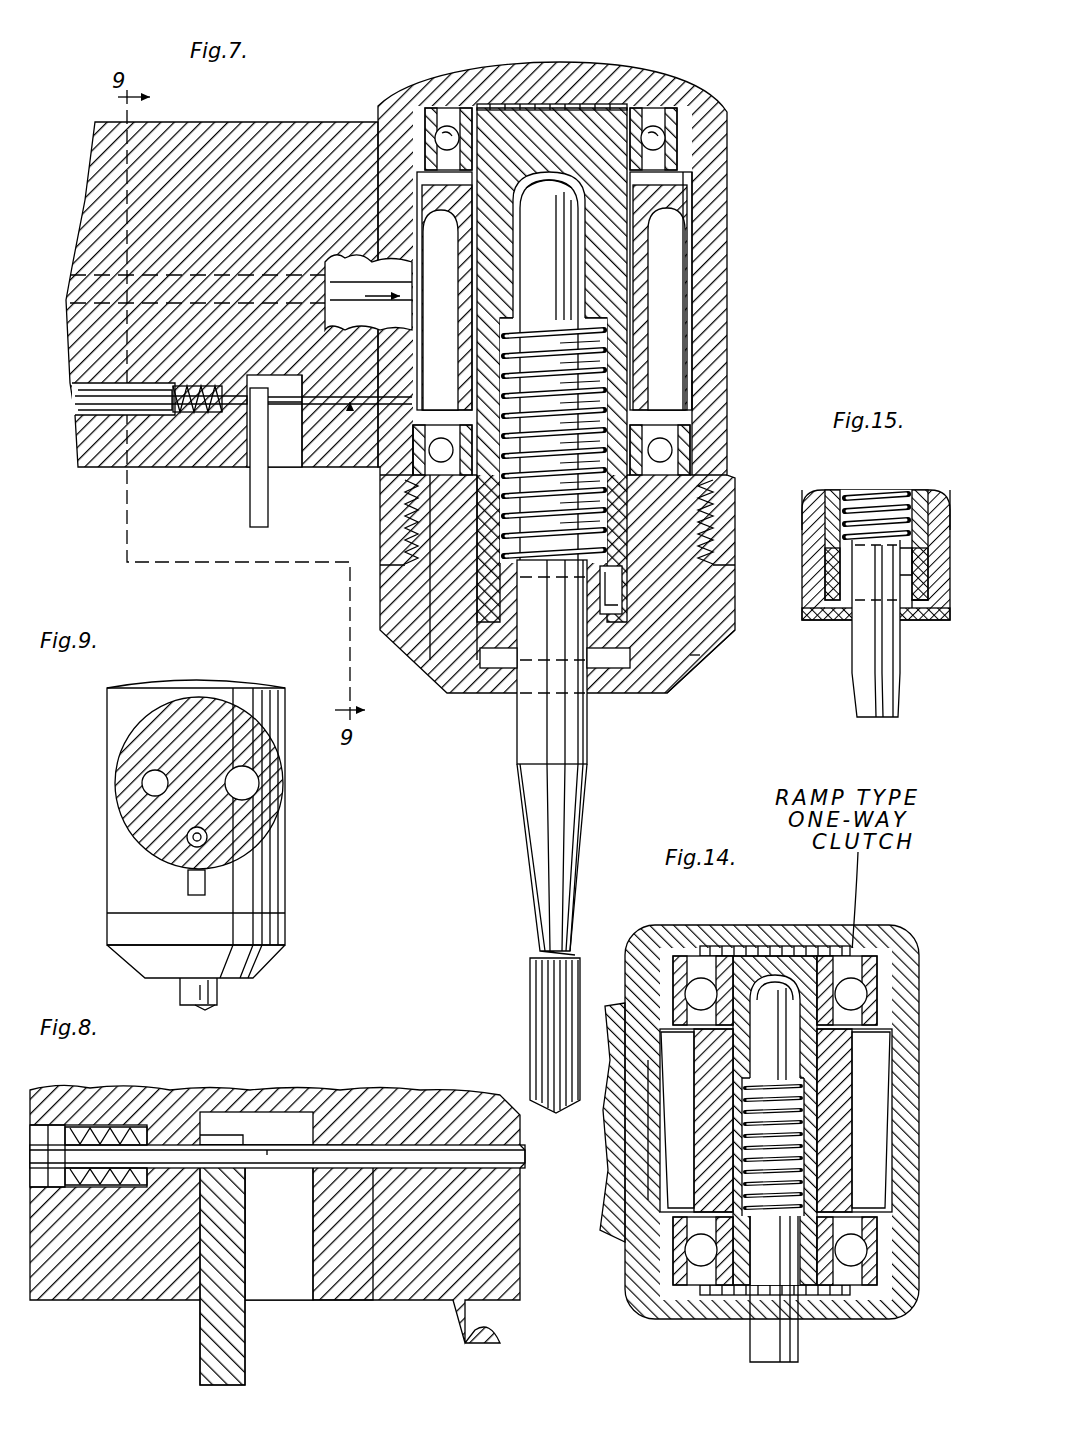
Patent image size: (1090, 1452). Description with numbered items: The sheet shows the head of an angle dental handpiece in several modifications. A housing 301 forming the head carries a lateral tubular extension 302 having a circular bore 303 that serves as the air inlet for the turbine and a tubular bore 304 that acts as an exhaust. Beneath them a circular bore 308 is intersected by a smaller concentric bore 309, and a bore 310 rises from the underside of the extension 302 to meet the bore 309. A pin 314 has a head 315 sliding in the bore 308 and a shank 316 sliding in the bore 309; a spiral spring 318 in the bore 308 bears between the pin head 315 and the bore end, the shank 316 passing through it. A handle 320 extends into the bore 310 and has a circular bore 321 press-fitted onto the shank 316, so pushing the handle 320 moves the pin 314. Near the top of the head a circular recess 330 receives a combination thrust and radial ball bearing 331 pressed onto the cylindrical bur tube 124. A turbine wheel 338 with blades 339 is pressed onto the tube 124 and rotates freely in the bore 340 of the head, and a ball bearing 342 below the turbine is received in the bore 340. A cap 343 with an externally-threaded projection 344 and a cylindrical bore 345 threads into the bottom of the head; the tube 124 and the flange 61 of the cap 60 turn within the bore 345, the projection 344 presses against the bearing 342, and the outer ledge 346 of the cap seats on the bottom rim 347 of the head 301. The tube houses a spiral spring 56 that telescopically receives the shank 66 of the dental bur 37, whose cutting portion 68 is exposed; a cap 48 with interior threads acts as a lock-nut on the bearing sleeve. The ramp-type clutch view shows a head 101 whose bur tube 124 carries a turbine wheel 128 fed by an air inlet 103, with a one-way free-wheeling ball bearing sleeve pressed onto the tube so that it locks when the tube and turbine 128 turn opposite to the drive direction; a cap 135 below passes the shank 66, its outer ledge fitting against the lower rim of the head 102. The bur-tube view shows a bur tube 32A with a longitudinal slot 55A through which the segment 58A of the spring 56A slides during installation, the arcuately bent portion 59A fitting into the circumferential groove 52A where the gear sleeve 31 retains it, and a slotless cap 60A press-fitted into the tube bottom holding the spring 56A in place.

In FIG. 7, the housing 301 is at (508, 72).
In FIG. 9, the housing 301 is at (205, 680).
In FIG. 7, the lateral tubular extension 302 is at (244, 130).
In FIG. 9, the lateral tubular extension 302 is at (250, 823).
In FIG. 8, the lateral tubular extension 302 is at (388, 1282).
In FIG. 7, the circular bore 303 is at (343, 262).
In FIG. 9, the circular bore 303 is at (145, 785).
In FIG. 9, the tubular bore 304 is at (245, 782).
In FIG. 7, the circular bore 308 is at (75, 420).
In FIG. 9, the circular bore 308 is at (205, 841).
In FIG. 8, the circular bore 308 is at (48, 1300).
In FIG. 7, the smaller concentric bore 309 is at (320, 410).
In FIG. 8, the smaller concentric bore 309 is at (384, 1145).
In FIG. 7, the bore 310 is at (300, 440).
In FIG. 8, the bore 310 is at (308, 1265).
In FIG. 7, the pin 314 is at (350, 412).
In FIG. 8, the pin 314 is at (267, 1142).
In FIG. 7, the head 315 is at (165, 405).
In FIG. 9, the head 315 is at (200, 838).
In FIG. 8, the head 315 is at (60, 1132).
In FIG. 7, the shank 316 is at (277, 402).
In FIG. 8, the shank 316 is at (365, 1162).
In FIG. 7, the spiral spring 318 is at (200, 414).
In FIG. 8, the spiral spring 318 is at (130, 1127).
In FIG. 7, the handle 320 is at (254, 518).
In FIG. 9, the handle 320 is at (190, 885).
In FIG. 8, the handle 320 is at (222, 1352).
In FIG. 8, the circular bore 321 is at (225, 1113).
In FIG. 7, the circular recess 330 is at (583, 110).
In FIG. 7, the combination thrust and radial ball bearing 331 is at (665, 143).
In FIG. 7, the turbine wheel 338 is at (690, 265).
In FIG. 7, the blades 339 is at (440, 232).
In FIG. 7, the bore 340 is at (690, 295).
In FIG. 7, the ball bearing 342 is at (700, 445).
In FIG. 7, the cap 343 is at (680, 662).
In FIG. 9, the cap 343 is at (256, 967).
In FIG. 7, the externally-threaded projection 344 is at (445, 500).
In FIG. 7, the cylindrical bore 345 is at (617, 598).
In FIG. 7, the outer ledge 346 is at (672, 680).
In FIG. 9, the outer ledge 346 is at (255, 915).
In FIG. 7, the bottom rim 347 is at (702, 492).
In FIG. 9, the bottom rim 347 is at (270, 922).
In FIG. 7, the bur tube 124 is at (605, 110).
In FIG. 14, the bur tube 124 is at (746, 968).
In FIG. 7, the shank 66 is at (565, 292).
In FIG. 9, the shank 66 is at (185, 989).
In FIG. 14, the shank 66 is at (782, 1048).
In FIG. 15, the shank 66 is at (866, 652).
In FIG. 7, the spiral spring 56 is at (610, 340).
In FIG. 14, the spiral spring 56 is at (745, 1085).
In FIG. 7, the cap 60 is at (490, 665).
In FIG. 7, the cylindrical flange 61 is at (630, 662).
In FIG. 7, the cap 48 is at (700, 655).
In FIG. 7, the dental bur 37 is at (594, 785).
In FIG. 9, the dental bur 37 is at (222, 995).
In FIG. 14, the dental bur 37 is at (748, 1352).
In FIG. 15, the dental bur 37 is at (855, 712).
In FIG. 7, the cutting portion 68 is at (540, 985).
In FIG. 14, the head 101 is at (662, 945).
In FIG. 14, the head 102 is at (622, 1232).
In FIG. 14, the air inlet 103 is at (640, 1100).
In FIG. 14, the turbine wheel 128 is at (700, 1162).
In FIG. 14, the cap 135 is at (885, 1318).
In FIG. 15, the gear sleeve 31 is at (930, 500).
In FIG. 15, the bur tube 32A is at (808, 522).
In FIG. 15, the circumferential groove 52A is at (830, 540).
In FIG. 15, the longitudinal slot 55A is at (893, 556).
In FIG. 15, the spring 56A is at (848, 498).
In FIG. 15, the segment 58A is at (835, 565).
In FIG. 15, the portion 59A is at (930, 618).
In FIG. 15, the cap 60A is at (835, 605).